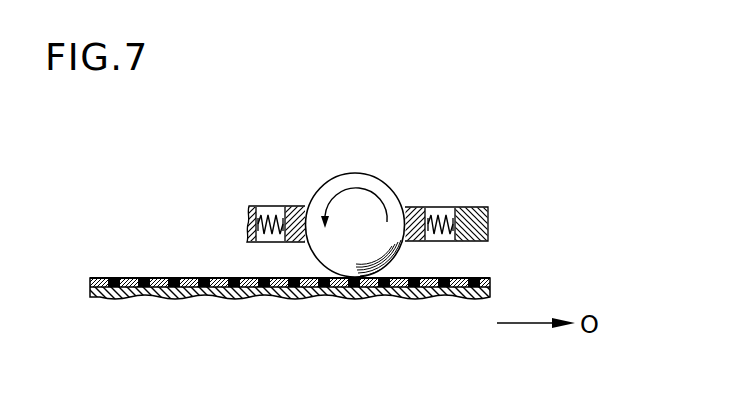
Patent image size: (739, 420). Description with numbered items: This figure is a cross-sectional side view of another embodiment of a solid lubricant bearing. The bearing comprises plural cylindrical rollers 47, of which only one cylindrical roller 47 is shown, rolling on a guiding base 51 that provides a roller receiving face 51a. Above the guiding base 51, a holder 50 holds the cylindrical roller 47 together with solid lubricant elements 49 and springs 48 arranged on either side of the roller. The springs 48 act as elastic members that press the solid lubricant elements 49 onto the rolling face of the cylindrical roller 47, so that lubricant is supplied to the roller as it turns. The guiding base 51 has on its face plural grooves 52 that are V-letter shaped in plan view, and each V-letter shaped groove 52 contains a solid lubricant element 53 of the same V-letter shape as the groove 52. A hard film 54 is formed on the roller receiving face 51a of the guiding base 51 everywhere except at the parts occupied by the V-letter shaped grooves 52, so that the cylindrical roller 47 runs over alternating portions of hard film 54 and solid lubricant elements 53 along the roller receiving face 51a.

The cylindrical roller 47 is at (333, 192).
The spring 48 is at (264, 210).
The solid lubricant element 49 is at (293, 207).
The holder 50 is at (479, 203).
The guiding base 51 is at (290, 298).
The roller receiving face 51a is at (155, 277).
The V-letter shaped groove 52 is at (233, 292).
The solid lubricant element 53 is at (228, 280).
The hard film 54 is at (255, 292).